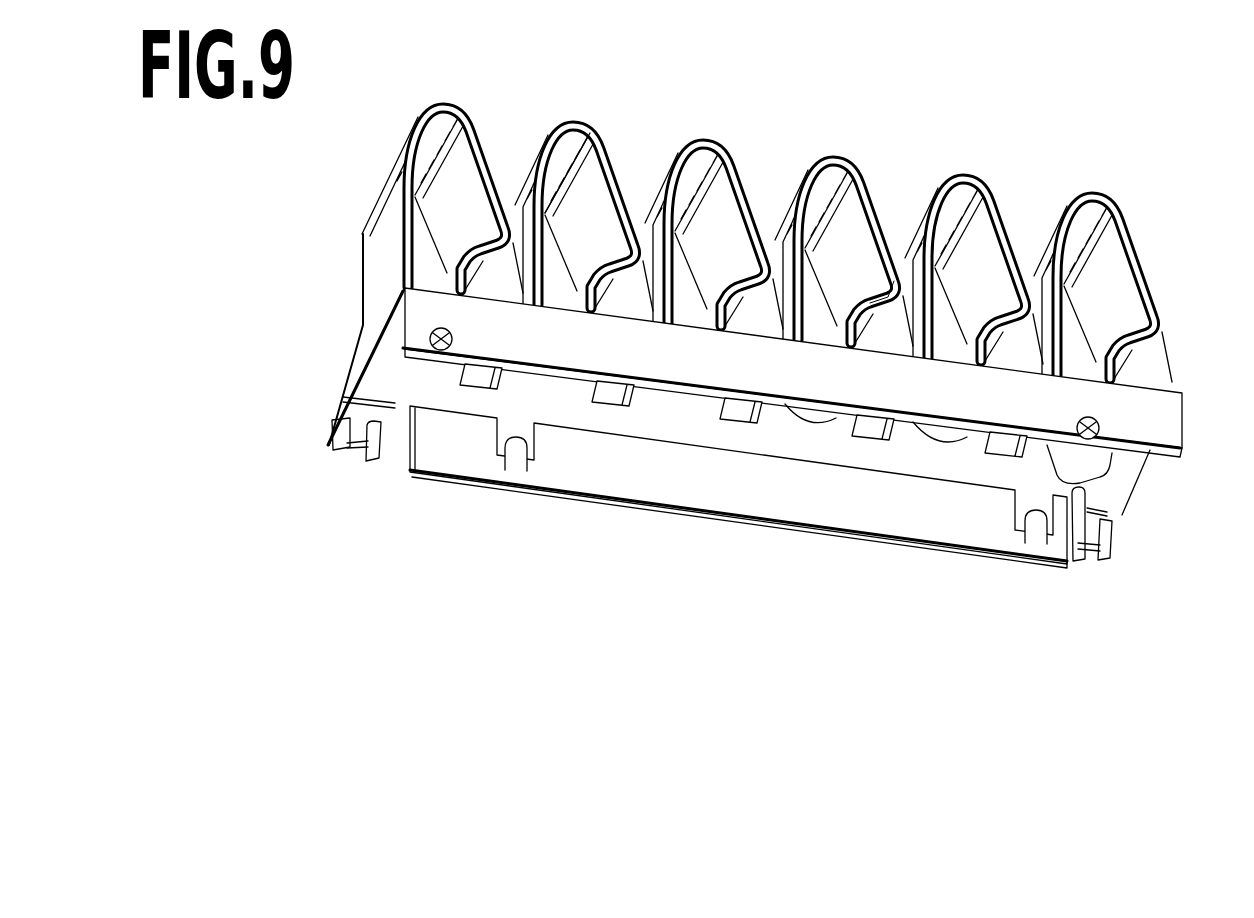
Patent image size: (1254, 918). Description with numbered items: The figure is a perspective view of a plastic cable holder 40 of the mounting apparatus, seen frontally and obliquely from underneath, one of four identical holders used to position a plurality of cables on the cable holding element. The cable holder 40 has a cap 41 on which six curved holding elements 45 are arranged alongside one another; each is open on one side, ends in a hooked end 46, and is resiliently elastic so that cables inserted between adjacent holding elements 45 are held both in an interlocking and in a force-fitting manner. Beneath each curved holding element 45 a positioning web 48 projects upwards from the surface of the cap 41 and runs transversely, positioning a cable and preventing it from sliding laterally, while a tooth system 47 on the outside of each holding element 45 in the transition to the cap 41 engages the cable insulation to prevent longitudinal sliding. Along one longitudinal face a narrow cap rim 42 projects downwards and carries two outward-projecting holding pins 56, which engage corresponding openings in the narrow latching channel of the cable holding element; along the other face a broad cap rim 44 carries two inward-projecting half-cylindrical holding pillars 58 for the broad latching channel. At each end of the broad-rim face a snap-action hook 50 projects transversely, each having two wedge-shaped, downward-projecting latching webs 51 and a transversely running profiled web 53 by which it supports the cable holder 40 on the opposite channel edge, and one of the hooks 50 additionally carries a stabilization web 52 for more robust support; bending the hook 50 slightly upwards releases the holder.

The cable holder 40 is at (995, 145).
The cap 41 is at (450, 392).
The narrow cap rim 42 is at (1135, 418).
The broad cap rim 44 is at (652, 483).
The curved holding element 45 is at (813, 160).
The hooked end 46 is at (893, 240).
The tooth system 47 is at (740, 415).
The positioning web 48 is at (617, 215).
The snap-action hook 50 is at (333, 430).
The latching web 51 is at (332, 472).
The stabilization web 52 is at (356, 378).
The profiled web 53 is at (355, 470).
The holding pin 56 is at (431, 336).
The holding pillar 58 is at (515, 453).